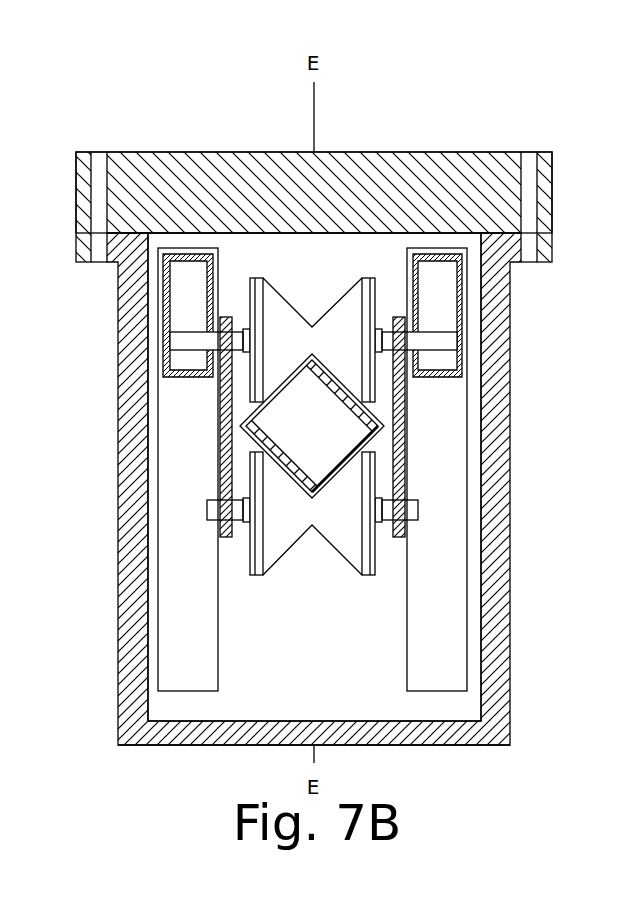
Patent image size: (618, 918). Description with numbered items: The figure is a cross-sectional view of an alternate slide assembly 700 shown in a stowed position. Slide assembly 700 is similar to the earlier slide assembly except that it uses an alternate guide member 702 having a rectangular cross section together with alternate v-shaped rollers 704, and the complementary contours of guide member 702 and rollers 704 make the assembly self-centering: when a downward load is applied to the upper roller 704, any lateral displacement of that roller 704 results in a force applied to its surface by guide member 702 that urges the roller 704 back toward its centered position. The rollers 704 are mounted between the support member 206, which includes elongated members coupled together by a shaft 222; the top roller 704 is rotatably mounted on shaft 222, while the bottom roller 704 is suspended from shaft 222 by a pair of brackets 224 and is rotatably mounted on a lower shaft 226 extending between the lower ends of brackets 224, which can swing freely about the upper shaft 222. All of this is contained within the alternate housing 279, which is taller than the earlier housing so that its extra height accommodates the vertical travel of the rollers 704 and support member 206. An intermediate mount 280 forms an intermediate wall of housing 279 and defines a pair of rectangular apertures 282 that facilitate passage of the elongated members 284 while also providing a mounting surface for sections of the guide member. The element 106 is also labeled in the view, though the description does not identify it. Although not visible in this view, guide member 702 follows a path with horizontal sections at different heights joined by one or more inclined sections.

The lid 106 is at (222, 166).
The slide assembly 700 is at (413, 134).
The elongated members 284 is at (208, 290).
The shaft 222 is at (438, 353).
The v-shaped rollers 704 is at (355, 346).
The guide member 702 is at (267, 427).
The support member 206 is at (176, 365).
The lower shaft 226 is at (393, 505).
The brackets 224 is at (228, 537).
The rectangular apertures 282 is at (162, 543).
The intermediate mount 280 is at (253, 665).
The housing 279 is at (173, 745).